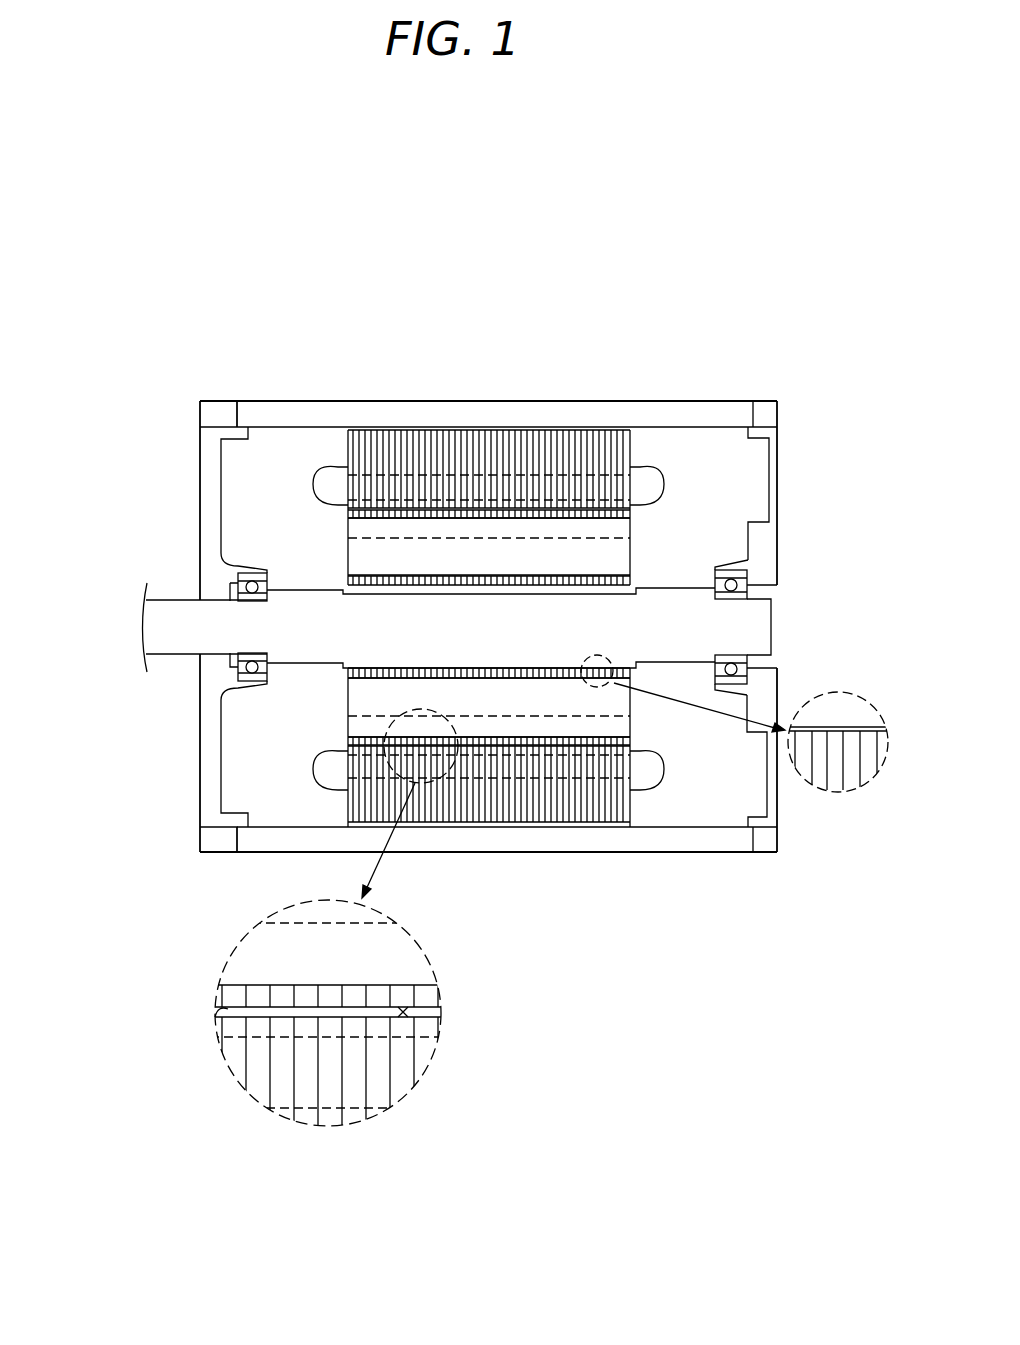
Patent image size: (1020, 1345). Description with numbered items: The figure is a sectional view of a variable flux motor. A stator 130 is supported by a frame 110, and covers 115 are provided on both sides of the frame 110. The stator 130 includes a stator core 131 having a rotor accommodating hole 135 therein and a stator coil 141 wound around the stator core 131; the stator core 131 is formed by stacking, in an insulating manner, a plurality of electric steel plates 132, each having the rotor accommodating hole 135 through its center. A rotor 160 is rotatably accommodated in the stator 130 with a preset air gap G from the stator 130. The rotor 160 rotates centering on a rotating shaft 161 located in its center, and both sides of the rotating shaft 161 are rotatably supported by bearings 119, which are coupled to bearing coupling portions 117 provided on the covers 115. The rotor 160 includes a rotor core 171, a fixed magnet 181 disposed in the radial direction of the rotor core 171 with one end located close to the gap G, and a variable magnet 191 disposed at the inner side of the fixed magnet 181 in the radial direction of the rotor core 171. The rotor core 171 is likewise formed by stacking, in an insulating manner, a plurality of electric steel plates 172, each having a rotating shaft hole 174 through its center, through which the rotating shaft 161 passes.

The frame 110 is at (668, 417).
The covers 115 is at (219, 417).
The bearing coupling portions 117 is at (248, 562).
The bearings 119 is at (250, 588).
The stator 130 is at (442, 819).
The stator core 131 is at (420, 819).
The electric steel plates 132 is at (630, 902).
The stator coil 141 is at (650, 775).
The rotor 160 is at (90, 672).
The rotating shaft 161 is at (318, 632).
The variable magnet 191 is at (362, 697).
The fixed magnet 181 is at (362, 725).
The rotor core 171 is at (345, 743).
The electric steel plates 172 is at (818, 765).
The rotating shaft hole 174 is at (850, 727).
The rotor accommodating hole 135 is at (218, 1013).
The gap G is at (408, 1012).